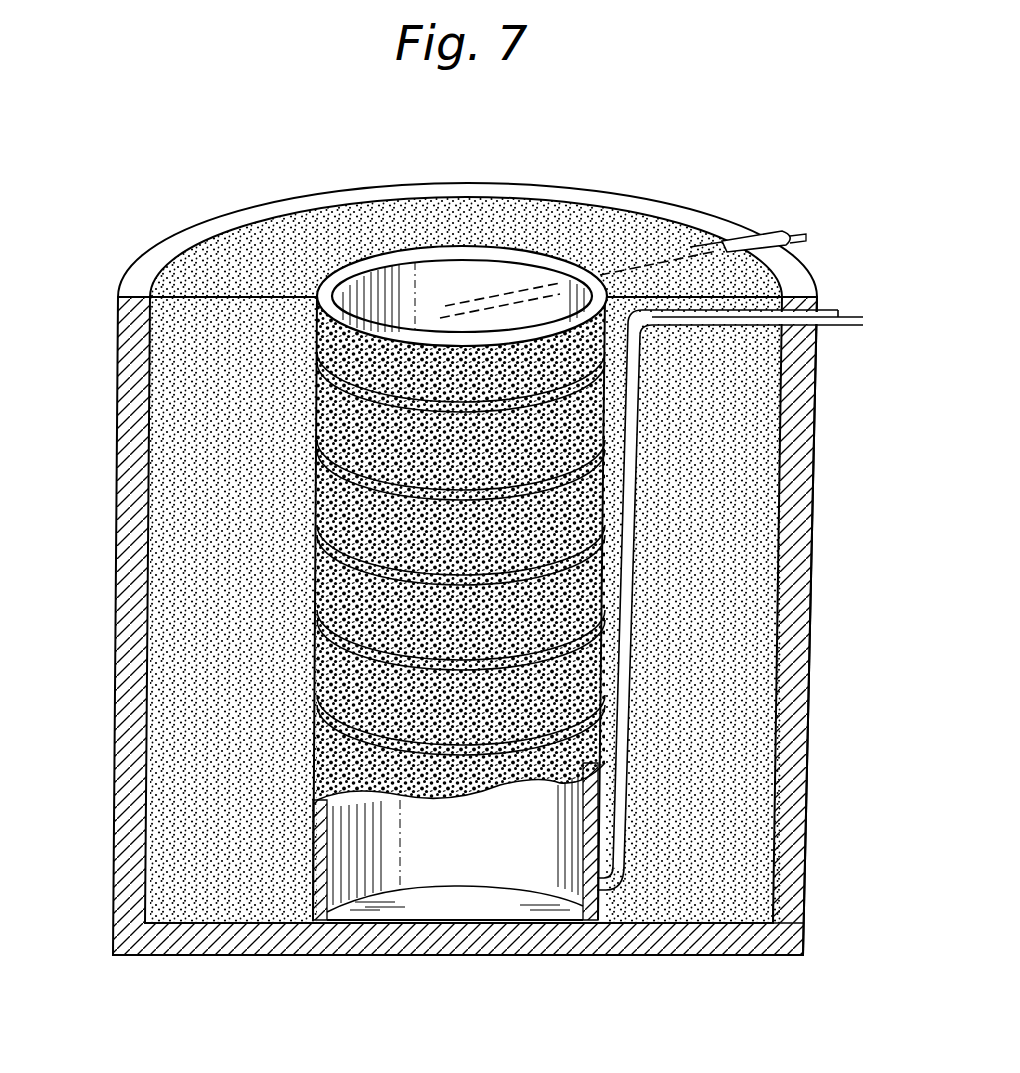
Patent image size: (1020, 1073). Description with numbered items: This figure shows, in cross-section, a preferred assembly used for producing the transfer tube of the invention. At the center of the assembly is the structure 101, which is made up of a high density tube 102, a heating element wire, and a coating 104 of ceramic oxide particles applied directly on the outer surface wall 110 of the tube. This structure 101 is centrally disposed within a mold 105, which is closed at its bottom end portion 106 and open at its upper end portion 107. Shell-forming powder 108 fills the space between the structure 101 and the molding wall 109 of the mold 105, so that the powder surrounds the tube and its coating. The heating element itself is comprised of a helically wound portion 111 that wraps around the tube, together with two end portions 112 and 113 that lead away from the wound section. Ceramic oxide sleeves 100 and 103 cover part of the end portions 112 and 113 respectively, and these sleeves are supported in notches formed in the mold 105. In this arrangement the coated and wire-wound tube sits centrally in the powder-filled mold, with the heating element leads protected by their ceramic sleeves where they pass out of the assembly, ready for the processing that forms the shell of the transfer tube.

The ceramic oxide sleeve 100 is at (820, 330).
The structure 101 is at (374, 248).
The high density tube 102 is at (528, 256).
The ceramic oxide sleeve 103 is at (748, 241).
The coating 104 is at (318, 588).
The mold 105 is at (790, 890).
The bottom end portion 106 is at (235, 957).
The upper end portion 107 is at (205, 232).
The shell-forming powder 108 is at (165, 433).
The molding wall 109 is at (776, 606).
The outer surface wall 110 is at (305, 840).
The helically wound portion 111 is at (300, 880).
The end portion 112 is at (798, 238).
The end portion 113 is at (853, 328).